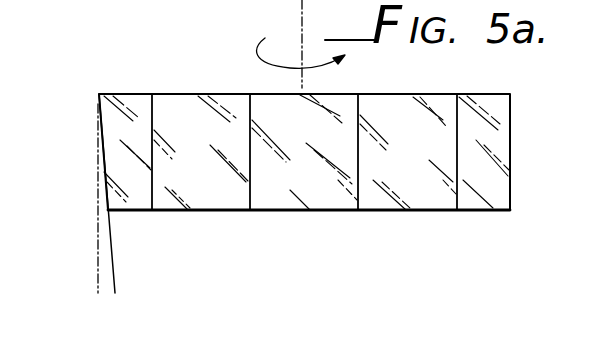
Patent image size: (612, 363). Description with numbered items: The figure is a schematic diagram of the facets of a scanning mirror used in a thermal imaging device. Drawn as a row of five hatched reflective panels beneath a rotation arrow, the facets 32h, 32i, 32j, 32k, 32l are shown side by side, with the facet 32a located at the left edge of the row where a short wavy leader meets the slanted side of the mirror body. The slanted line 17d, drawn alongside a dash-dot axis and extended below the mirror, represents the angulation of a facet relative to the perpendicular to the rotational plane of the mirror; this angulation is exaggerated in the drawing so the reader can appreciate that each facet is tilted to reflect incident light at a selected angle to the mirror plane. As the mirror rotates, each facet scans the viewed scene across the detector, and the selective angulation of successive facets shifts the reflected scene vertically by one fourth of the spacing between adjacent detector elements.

The rotation axis 17d is at (98, 279).
The facet 32a is at (100, 143).
The reflective facet 32h is at (488, 211).
The reflective facet 32i is at (394, 211).
The reflective facet 32j is at (303, 211).
The reflective facet 32k is at (210, 211).
The reflective facet 32l is at (137, 211).